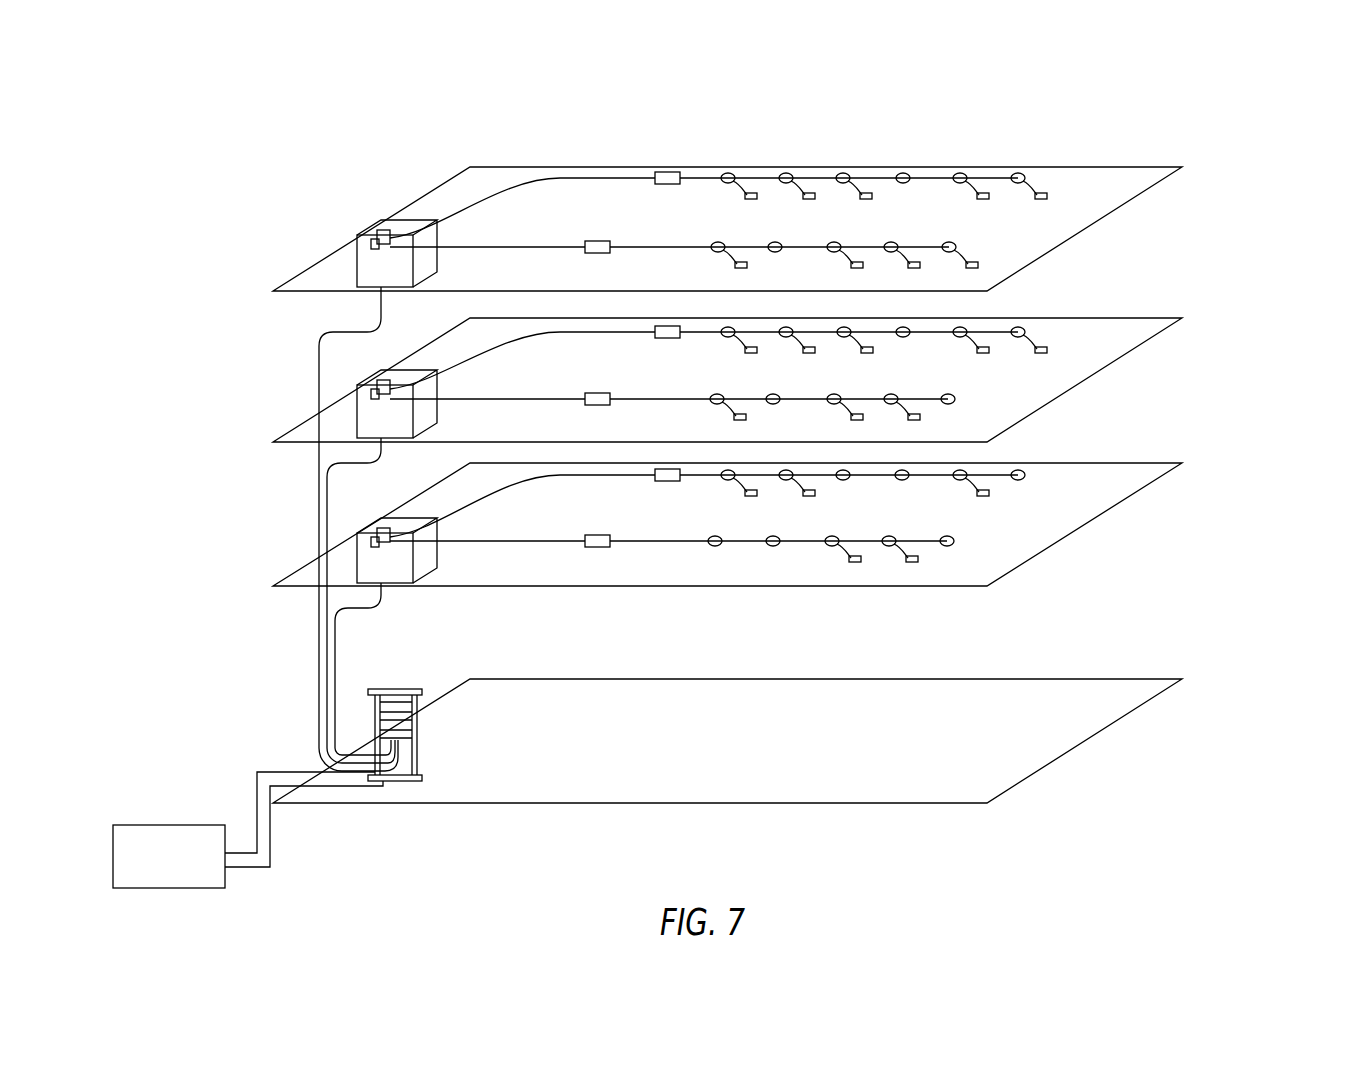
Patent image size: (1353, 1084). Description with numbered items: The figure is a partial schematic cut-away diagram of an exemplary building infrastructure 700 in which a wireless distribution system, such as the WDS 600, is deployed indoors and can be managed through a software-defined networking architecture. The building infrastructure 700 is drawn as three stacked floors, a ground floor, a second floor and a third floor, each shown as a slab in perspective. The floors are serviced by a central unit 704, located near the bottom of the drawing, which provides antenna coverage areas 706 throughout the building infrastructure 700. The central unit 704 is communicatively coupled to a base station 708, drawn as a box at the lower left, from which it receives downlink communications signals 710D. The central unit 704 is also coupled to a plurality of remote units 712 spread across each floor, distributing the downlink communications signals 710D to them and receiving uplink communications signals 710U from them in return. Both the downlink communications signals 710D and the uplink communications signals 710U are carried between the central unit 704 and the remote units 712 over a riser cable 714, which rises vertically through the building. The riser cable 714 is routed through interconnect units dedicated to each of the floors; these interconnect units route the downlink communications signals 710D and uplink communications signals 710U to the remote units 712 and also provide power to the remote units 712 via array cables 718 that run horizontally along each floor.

The building infrastructure 700 is at (877, 108).
The WDS 600 is at (1112, 582).
The antenna coverage areas 706 is at (1077, 335).
The array cables 718 is at (600, 179).
The remote units 712 is at (985, 196).
The riser cable 714 is at (318, 678).
The central unit 704 is at (432, 742).
The base station 708 is at (169, 856).
The uplink communications signals 710U is at (256, 766).
The downlink communications signals 710D is at (272, 873).